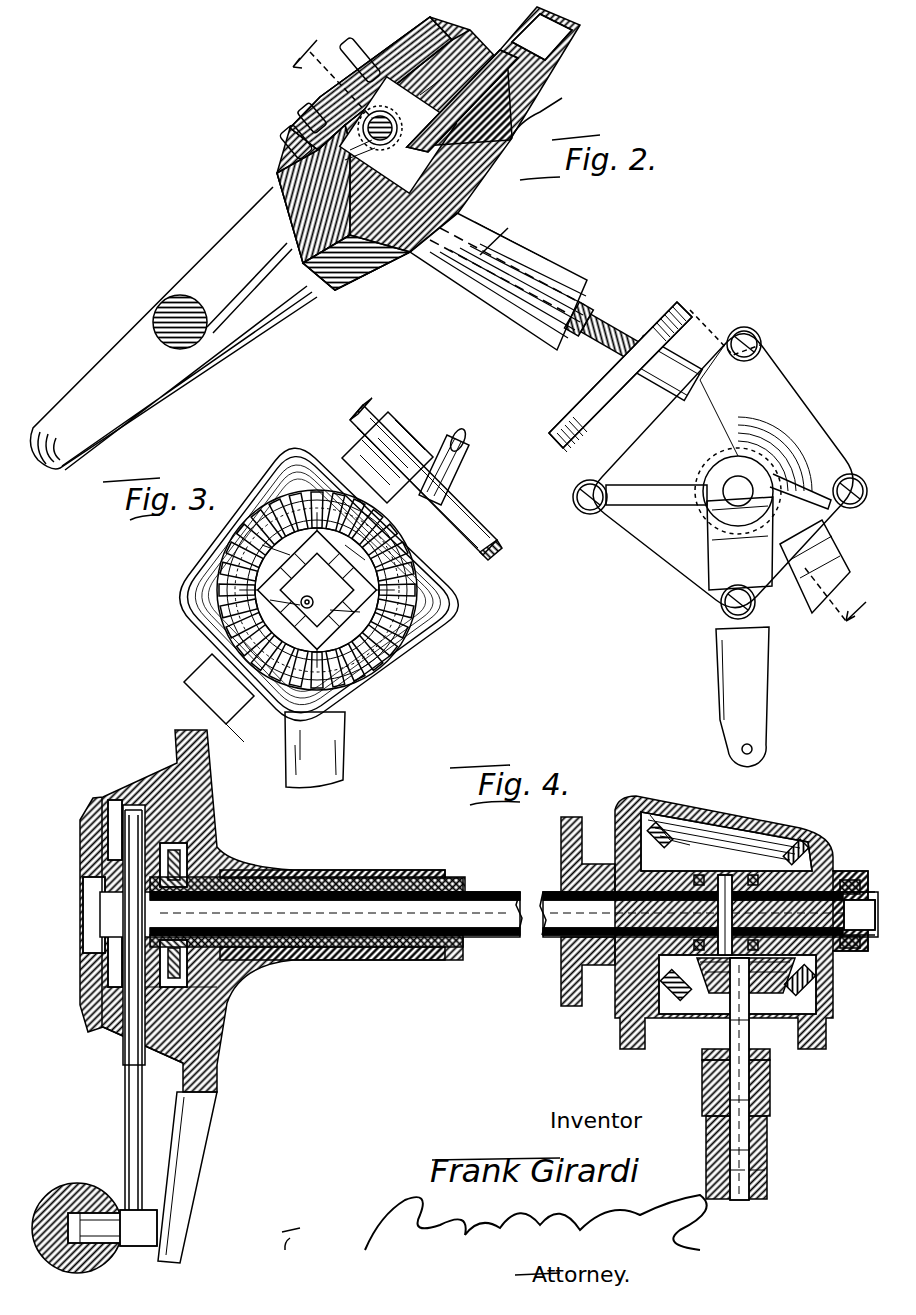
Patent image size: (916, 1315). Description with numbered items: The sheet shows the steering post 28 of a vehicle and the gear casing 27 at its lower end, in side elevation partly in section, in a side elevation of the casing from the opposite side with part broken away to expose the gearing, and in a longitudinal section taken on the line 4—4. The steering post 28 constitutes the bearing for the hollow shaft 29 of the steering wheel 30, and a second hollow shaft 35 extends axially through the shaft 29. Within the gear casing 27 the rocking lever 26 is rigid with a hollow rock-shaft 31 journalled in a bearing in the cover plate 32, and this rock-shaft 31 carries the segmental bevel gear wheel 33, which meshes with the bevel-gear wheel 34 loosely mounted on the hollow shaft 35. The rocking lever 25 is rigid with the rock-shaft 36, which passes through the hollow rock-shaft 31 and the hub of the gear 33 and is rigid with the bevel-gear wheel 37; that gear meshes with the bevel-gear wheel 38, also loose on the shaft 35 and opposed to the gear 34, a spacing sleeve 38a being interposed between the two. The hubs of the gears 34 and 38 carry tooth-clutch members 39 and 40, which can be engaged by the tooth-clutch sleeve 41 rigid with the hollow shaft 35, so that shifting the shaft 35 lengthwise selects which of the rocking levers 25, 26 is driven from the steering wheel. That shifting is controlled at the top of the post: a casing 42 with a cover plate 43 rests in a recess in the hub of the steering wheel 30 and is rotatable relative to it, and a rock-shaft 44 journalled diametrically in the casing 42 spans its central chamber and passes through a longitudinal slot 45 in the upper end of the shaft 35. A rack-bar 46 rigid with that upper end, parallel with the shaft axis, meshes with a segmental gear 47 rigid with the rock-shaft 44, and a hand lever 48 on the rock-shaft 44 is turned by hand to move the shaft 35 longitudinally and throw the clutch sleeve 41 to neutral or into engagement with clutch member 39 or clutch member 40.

In FIG. 2, the section line 4— 4 is at (575, 336).
In FIG. 2, the rocking lever 25 is at (720, 570).
In FIG. 4, the rocking lever 25 is at (767, 1140).
In FIG. 2, the rocking lever 26 is at (718, 627).
In FIG. 3, the rocking lever 26 is at (347, 780).
In FIG. 4, the rocking lever 26 is at (768, 1115).
In FIG. 2, the gear casing 27 is at (642, 566).
In FIG. 3, the gear casing 27 is at (160, 612).
In FIG. 4, the gear casing 27 is at (790, 840).
In FIG. 2, the steering post 28 is at (588, 282).
In FIG. 4, the steering post 28 is at (445, 962).
In FIG. 2, the hollow shaft 29 is at (598, 305).
In FIG. 4, the hollow shaft 29 is at (462, 948).
In FIG. 2, the steering wheel 30 is at (226, 348).
In FIG. 4, the steering wheel 30 is at (217, 1085).
In FIG. 4, the hollow rock-shaft 31 is at (771, 1090).
In FIG. 2, the cover plate 32 is at (640, 520).
In FIG. 4, the cover plate 32 is at (775, 1054).
In FIG. 3, the segmental bevel gear wheel 33 is at (262, 545).
In FIG. 4, the segmental bevel gear wheel 33 is at (690, 1022).
In FIG. 3, the bevel-gear wheel 34 is at (342, 505).
In FIG. 4, the bevel-gear wheel 34 is at (612, 1005).
In FIG. 2, the hollow shaft 35 is at (603, 330).
In FIG. 3, the hollow shaft 35 is at (472, 468).
In FIG. 4, the hollow shaft 35 is at (535, 940).
In FIG. 2, the rock-shaft 36 is at (722, 482).
In FIG. 4, the rock-shaft 36 is at (749, 1171).
In FIG. 3, the bevel-gear wheel 37 is at (250, 572).
In FIG. 4, the bevel-gear wheel 37 is at (800, 975).
In FIG. 3, the bevel-gear wheel 38 is at (225, 640).
In FIG. 4, the bevel-gear wheel 38 is at (832, 858).
In FIG. 3, the spacing sleeve 38a is at (300, 520).
In FIG. 4, the spacing sleeve 38a is at (765, 835).
In FIG. 3, the tooth-clutch member 39 is at (408, 548).
In FIG. 4, the tooth-clutch member 39 is at (697, 875).
In FIG. 3, the tooth-clutch member 40 is at (278, 715).
In FIG. 4, the tooth-clutch member 40 is at (828, 848).
In FIG. 3, the tooth-clutch sleeve 41 is at (370, 655).
In FIG. 4, the tooth-clutch sleeve 41 is at (724, 875).
In FIG. 2, the casing 42 is at (330, 208).
In FIG. 4, the casing 42 is at (118, 1040).
In FIG. 2, the cover plate 43 is at (287, 143).
In FIG. 4, the cover plate 43 is at (90, 1003).
In FIG. 2, the rock-shaft 44 is at (378, 115).
In FIG. 4, the rock-shaft 44 is at (124, 1085).
In FIG. 2, the longitudinal slot 45 is at (490, 162).
In FIG. 4, the longitudinal slot 45 is at (240, 850).
In FIG. 2, the rack-bar 46 is at (302, 122).
In FIG. 4, the rack-bar 46 is at (200, 965).
In FIG. 2, the segmental gear 47 is at (360, 118).
In FIG. 4, the segmental gear 47 is at (118, 960).
In FIG. 4, the hand lever 48 is at (72, 1185).